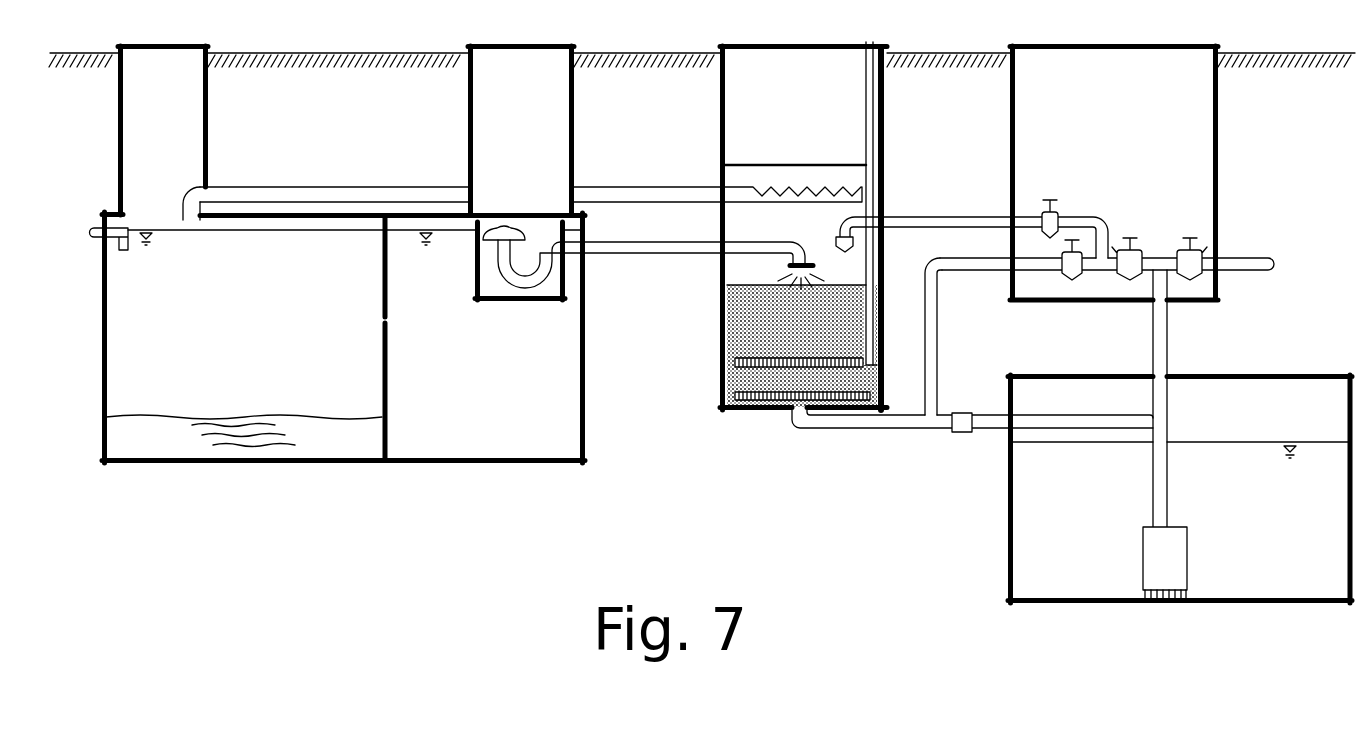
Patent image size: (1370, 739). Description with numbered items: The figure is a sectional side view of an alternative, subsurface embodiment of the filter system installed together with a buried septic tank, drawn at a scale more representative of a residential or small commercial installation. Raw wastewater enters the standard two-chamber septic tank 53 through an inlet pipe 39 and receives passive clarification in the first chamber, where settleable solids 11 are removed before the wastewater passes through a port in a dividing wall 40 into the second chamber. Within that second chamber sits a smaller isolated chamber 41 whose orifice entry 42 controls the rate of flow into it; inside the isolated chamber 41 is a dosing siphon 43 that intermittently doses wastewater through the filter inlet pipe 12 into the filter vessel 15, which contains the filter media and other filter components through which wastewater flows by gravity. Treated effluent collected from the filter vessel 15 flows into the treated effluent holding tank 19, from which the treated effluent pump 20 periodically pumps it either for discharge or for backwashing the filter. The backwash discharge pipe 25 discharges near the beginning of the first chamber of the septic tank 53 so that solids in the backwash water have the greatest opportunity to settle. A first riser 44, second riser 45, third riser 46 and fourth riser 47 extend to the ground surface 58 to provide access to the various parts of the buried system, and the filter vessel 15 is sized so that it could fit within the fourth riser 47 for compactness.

The ground surface 58 is at (390, 52).
The first riser 44 is at (208, 100).
The second riser 45 is at (574, 105).
The third riser 46 is at (720, 100).
The fourth riser 47 is at (1218, 112).
The inlet pipe 39 is at (92, 230).
The backwash discharge pipe 25 is at (445, 187).
The dosing siphon 43 is at (500, 228).
The orifice entry 42 is at (475, 245).
The isolated chamber 41 is at (475, 290).
The filter inlet pipe 12 is at (630, 253).
The filter vessel 15 is at (720, 275).
The settleable solids 11 is at (240, 416).
The dividing wall 40 is at (388, 365).
The septic tank 53 is at (585, 408).
The treated effluent holding tank 19 is at (1008, 490).
The treated effluent pump 20 is at (1175, 550).